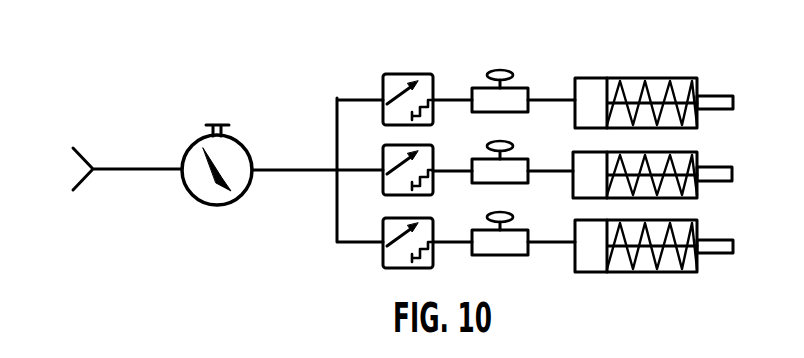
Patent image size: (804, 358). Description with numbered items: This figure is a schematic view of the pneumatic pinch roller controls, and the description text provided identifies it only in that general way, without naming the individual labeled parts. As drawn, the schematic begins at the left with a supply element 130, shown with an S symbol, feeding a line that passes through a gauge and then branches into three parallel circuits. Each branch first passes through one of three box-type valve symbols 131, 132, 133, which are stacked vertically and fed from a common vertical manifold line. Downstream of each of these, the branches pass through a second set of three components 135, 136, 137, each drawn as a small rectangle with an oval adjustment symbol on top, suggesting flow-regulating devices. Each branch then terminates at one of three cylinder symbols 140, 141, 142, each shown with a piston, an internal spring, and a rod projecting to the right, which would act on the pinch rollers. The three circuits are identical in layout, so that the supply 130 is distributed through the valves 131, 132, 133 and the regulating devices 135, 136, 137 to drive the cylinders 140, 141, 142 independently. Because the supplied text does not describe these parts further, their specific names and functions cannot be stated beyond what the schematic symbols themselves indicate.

The pressure supply source 130 is at (82, 152).
The solenoid valve 131 is at (397, 74).
The solenoid valve 132 is at (384, 158).
The solenoid valve 133 is at (385, 228).
The flow control valve 135 is at (484, 95).
The flow control valve 136 is at (484, 167).
The flow control valve 137 is at (482, 237).
The spring-return cylinder 140 is at (592, 78).
The spring-return cylinder 141 is at (576, 165).
The spring-return cylinder 142 is at (577, 236).